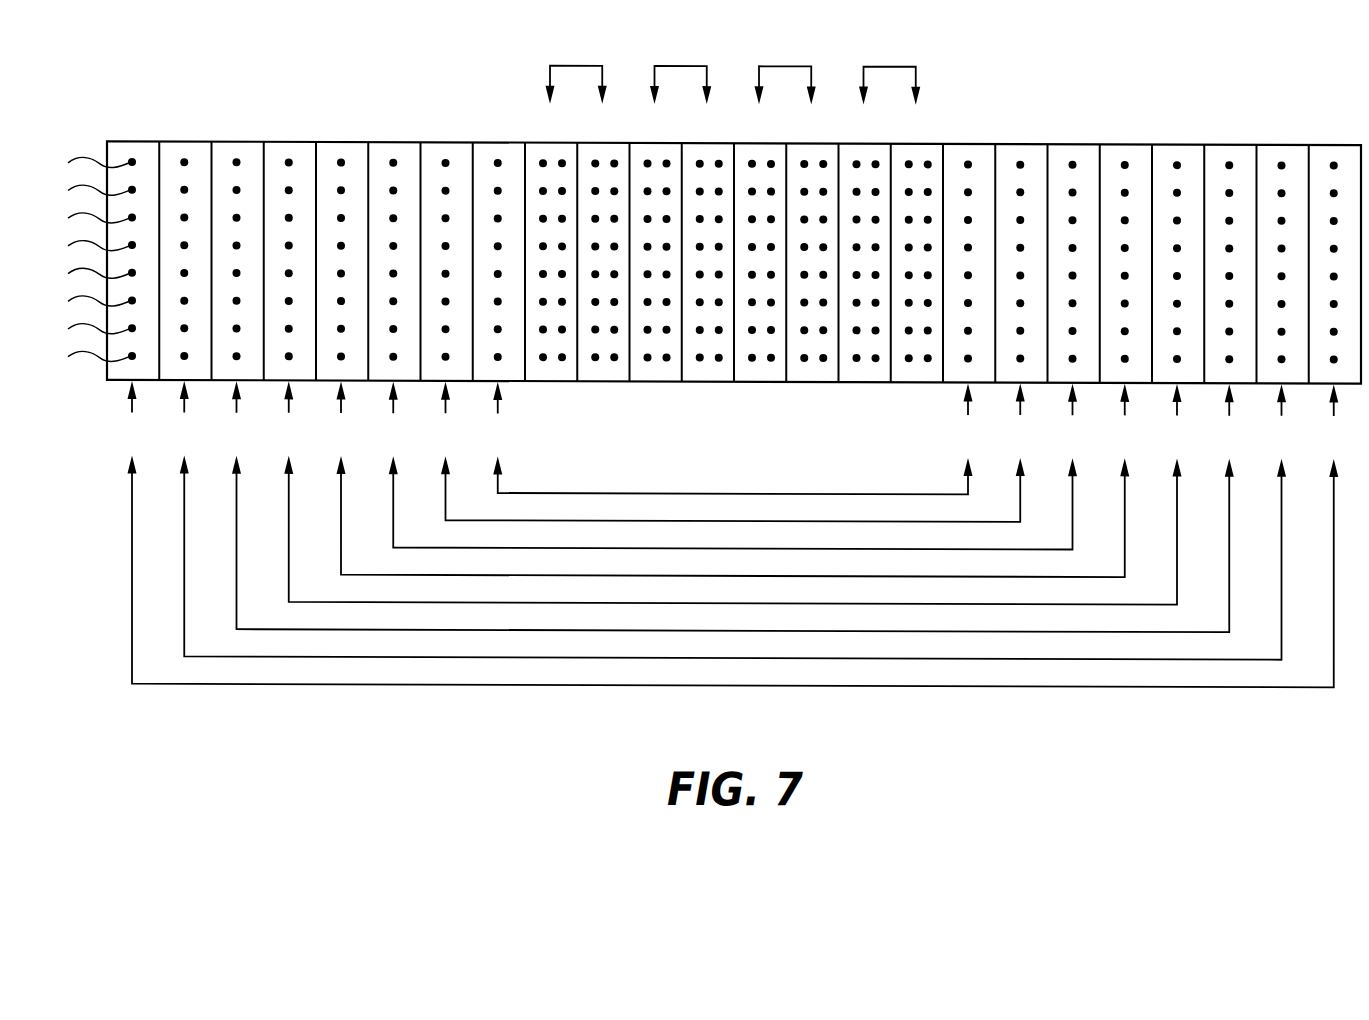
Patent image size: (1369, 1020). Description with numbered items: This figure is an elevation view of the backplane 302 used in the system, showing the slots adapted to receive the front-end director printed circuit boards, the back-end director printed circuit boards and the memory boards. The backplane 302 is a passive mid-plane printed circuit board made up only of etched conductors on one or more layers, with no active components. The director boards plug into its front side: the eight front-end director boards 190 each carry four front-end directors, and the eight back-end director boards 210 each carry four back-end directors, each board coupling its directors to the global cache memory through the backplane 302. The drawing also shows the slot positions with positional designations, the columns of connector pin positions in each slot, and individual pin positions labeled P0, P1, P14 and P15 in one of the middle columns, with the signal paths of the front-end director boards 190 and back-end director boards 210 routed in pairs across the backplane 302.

The backplane 302 is at (98, 130).
The back-end director boards 210 is at (734, 534).
The front-end director boards 190 is at (734, 506).
The mask bit P0 is at (562, 162).
The mask bit P1 is at (543, 162).
The mask bit P14 is at (562, 356).
The mask bit P15 is at (543, 356).